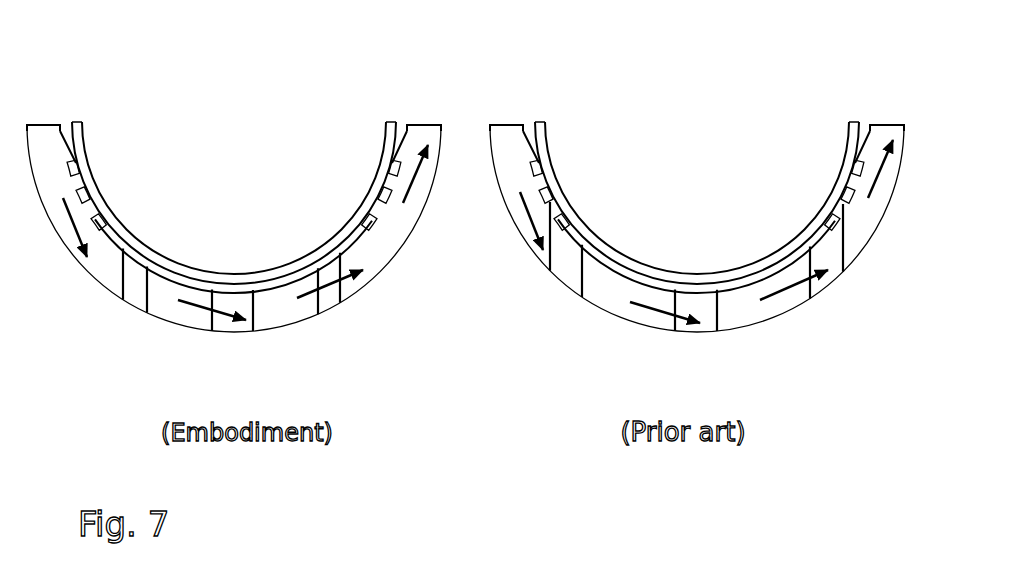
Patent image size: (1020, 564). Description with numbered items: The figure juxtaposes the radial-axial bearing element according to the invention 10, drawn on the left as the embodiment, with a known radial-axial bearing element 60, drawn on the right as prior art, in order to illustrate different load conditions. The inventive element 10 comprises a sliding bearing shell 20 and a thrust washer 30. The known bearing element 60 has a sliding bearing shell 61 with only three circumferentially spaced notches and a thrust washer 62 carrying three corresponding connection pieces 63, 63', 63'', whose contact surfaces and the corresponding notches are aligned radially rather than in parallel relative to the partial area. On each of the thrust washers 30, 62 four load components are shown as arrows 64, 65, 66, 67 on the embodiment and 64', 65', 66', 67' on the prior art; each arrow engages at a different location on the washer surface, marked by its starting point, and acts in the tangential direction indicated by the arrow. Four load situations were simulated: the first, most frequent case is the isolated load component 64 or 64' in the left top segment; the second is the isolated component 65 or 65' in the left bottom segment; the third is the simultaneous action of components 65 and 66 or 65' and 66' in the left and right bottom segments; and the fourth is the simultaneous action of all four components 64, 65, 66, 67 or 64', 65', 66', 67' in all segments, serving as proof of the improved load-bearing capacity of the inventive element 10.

The radial-axial bearing element according to the invention 10 is at (143, 82).
The inner band / retaining ring 20 is at (380, 137).
The thrust washer 30 is at (412, 142).
The load component 64 is at (59, 295).
The load component 65 is at (211, 346).
The load component 66 is at (330, 331).
The load component 67 is at (425, 268).
The known radial-axial bearing element 60 is at (602, 82).
The sliding bearing shell 61 is at (847, 135).
The thrust washer 62 is at (878, 142).
The connection piece 63 is at (598, 149).
The connection piece 63' is at (696, 180).
The connection piece 63'' is at (804, 149).
The load component 64' is at (521, 292).
The load component 65' is at (665, 347).
The load component 66' is at (794, 331).
The load component 67' is at (892, 266).